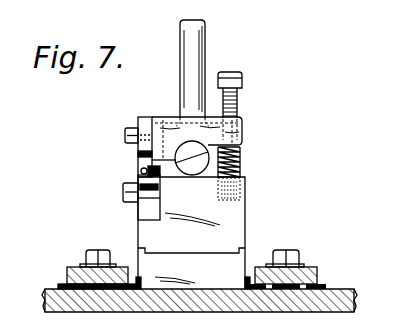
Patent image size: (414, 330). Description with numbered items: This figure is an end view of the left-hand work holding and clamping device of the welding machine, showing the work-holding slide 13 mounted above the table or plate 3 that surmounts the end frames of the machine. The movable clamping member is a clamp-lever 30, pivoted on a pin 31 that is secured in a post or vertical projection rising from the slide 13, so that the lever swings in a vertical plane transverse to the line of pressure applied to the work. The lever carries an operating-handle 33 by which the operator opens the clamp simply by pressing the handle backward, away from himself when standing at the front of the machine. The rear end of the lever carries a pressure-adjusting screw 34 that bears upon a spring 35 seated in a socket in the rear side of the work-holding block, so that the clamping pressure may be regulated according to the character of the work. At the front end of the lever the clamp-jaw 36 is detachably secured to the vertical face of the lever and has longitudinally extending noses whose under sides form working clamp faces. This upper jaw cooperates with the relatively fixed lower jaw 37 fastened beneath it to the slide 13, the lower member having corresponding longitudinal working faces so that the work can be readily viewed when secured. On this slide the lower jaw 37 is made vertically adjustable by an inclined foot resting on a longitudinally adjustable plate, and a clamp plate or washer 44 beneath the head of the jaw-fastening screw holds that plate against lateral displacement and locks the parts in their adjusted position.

The table or plate 3 is at (338, 292).
The work-holding slide 13 is at (193, 233).
The clamp-lever 30 is at (190, 128).
The pin 31 is at (185, 150).
The operating-handle 33 is at (206, 46).
The pressure-adjusting screw 34 is at (242, 95).
The spring 35 is at (241, 169).
The clamp-jaw 36 is at (137, 124).
The fixed jaw 37 is at (140, 171).
The clamp plate or washer 44 is at (138, 204).